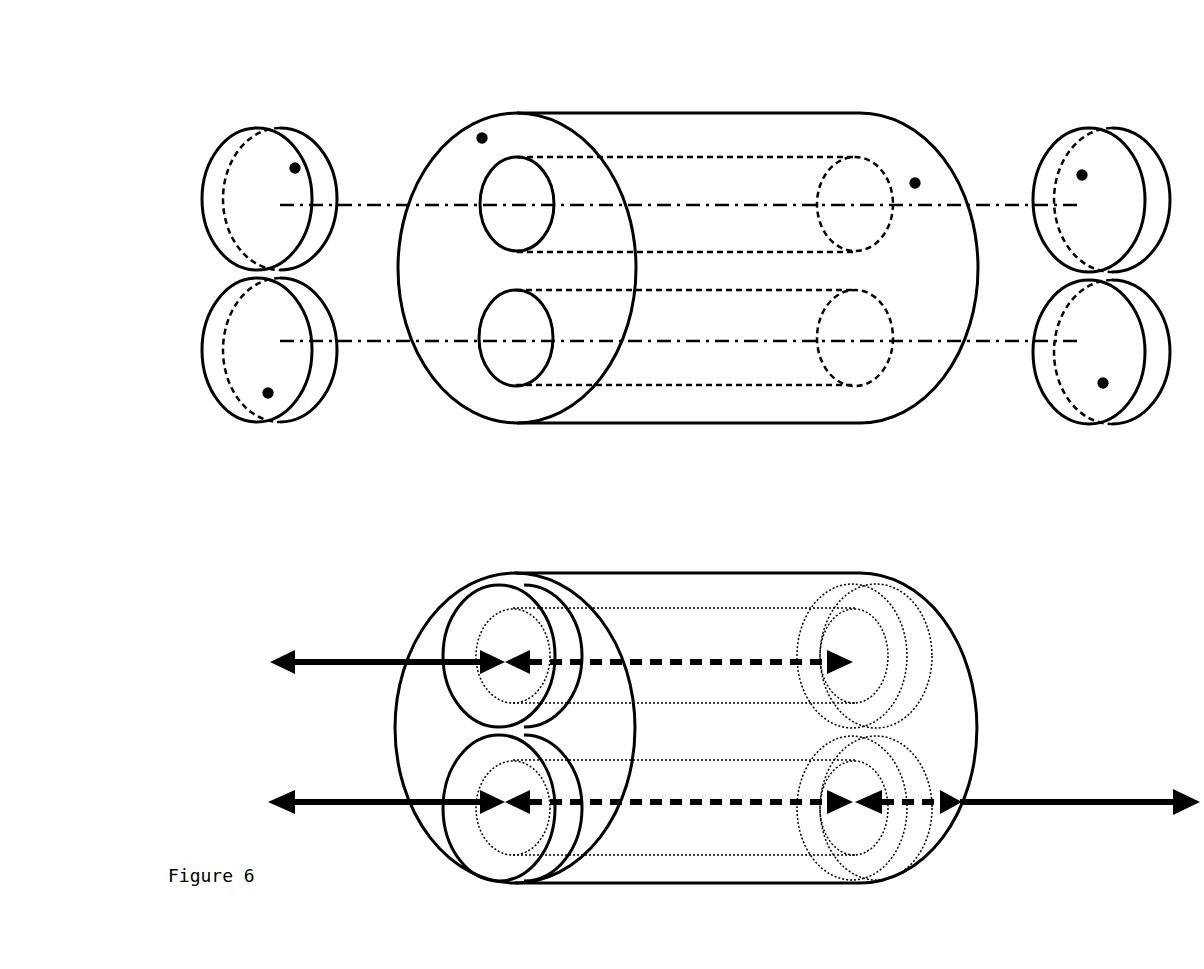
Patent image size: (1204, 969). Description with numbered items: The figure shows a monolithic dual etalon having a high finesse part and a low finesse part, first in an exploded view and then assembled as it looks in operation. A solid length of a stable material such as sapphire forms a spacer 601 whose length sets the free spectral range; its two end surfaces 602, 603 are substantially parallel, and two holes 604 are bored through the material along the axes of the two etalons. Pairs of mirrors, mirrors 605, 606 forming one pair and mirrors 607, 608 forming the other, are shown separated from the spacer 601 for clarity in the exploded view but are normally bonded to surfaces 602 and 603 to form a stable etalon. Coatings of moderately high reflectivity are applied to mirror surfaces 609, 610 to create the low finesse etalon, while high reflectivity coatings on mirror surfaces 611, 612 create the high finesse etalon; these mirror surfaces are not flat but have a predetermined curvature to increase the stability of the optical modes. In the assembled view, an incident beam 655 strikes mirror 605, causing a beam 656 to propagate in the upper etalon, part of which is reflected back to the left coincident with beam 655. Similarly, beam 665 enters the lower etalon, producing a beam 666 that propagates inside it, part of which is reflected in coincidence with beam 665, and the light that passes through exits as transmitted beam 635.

In FIG. 6A, the spacer 601 is at (675, 113).
In FIG. 6A, the surface 602 is at (482, 138).
In FIG. 6A, the surface 603 is at (915, 183).
In FIG. 6A, the holes 604 is at (513, 222).
In FIG. 6A, the mirror 605 is at (222, 143).
In FIG. 6A, the mirror 606 is at (1105, 130).
In FIG. 6A, the mirror 607 is at (207, 317).
In FIG. 6A, the mirror 608 is at (1107, 423).
In FIG. 6A, the mirror surface 609 is at (295, 168).
In FIG. 6A, the mirror surface 610 is at (1082, 175).
In FIG. 6A, the mirror surface 611 is at (268, 393).
In FIG. 6A, the mirror surface 612 is at (1103, 383).
In FIG. 6B, the beam 655 is at (375, 658).
In FIG. 6B, the beam 656 is at (722, 658).
In FIG. 6B, the beam 665 is at (355, 798).
In FIG. 6B, the beam 666 is at (698, 802).
In FIG. 6B, the transmitted beam 635 is at (1083, 802).